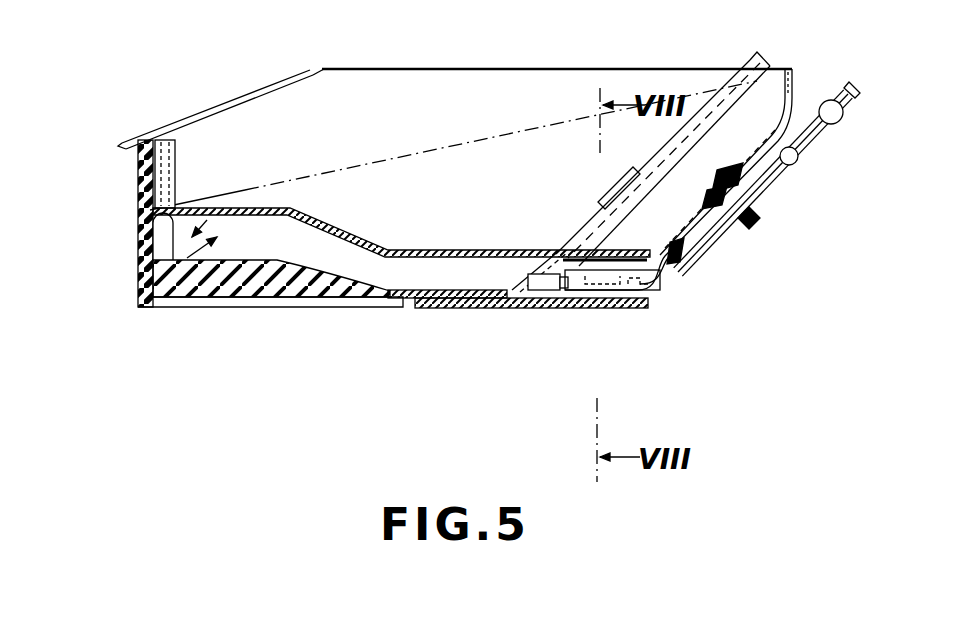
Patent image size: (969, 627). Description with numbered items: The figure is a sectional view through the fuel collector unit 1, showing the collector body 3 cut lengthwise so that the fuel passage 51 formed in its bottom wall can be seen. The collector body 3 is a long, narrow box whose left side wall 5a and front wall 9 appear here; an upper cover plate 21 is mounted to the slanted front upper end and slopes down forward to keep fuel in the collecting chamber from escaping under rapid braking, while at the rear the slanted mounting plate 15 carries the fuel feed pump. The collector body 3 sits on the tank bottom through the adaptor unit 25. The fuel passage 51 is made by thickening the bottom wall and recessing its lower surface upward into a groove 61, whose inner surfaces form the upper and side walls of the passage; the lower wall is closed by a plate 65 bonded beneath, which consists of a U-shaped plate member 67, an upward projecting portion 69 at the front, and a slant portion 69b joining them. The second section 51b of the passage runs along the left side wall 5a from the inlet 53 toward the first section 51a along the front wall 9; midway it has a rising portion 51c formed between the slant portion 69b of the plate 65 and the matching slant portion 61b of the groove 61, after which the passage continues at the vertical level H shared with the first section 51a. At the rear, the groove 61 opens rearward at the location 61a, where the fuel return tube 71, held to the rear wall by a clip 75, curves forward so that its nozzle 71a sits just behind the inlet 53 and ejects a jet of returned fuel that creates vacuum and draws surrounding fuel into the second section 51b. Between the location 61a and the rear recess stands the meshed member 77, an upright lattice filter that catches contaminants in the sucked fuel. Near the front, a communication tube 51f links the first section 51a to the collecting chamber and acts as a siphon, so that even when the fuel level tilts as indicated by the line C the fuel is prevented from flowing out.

The fuel collector unit 1 is at (148, 130).
The collector body 3 is at (365, 64).
The left side wall 5a is at (425, 100).
The front wall 9 is at (143, 197).
The mounting plate 15 is at (706, 106).
The upper cover plate 21 is at (263, 282).
The adaptor unit 25 is at (612, 308).
The fuel passage 51 is at (143, 288).
The first section 51a is at (162, 241).
The second section 51b is at (393, 270).
The rising portion 51c is at (337, 258).
The communication tube 51f is at (178, 164).
The inlet 53 is at (510, 270).
The groove 61 is at (478, 262).
The location 61a is at (655, 283).
The slant portion 61b is at (355, 255).
The plate 65 is at (232, 300).
The plate member 67 is at (462, 306).
The upward projecting portion 69 is at (190, 282).
The slant portion 69b is at (331, 207).
The fuel return tube 71 is at (770, 180).
The nozzle 71a is at (545, 292).
The clip 75 is at (757, 222).
The meshed member 77 is at (596, 258).
The line C is at (525, 131).
The vertical level H is at (212, 208).